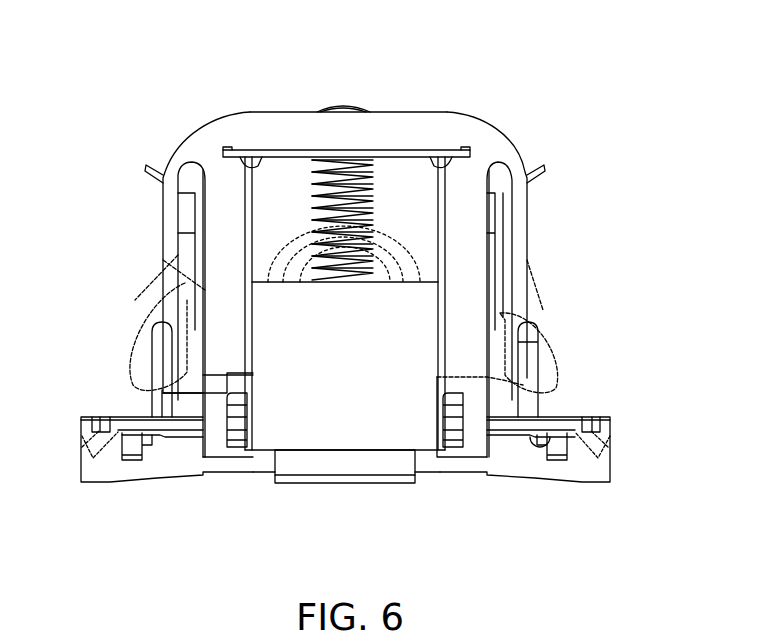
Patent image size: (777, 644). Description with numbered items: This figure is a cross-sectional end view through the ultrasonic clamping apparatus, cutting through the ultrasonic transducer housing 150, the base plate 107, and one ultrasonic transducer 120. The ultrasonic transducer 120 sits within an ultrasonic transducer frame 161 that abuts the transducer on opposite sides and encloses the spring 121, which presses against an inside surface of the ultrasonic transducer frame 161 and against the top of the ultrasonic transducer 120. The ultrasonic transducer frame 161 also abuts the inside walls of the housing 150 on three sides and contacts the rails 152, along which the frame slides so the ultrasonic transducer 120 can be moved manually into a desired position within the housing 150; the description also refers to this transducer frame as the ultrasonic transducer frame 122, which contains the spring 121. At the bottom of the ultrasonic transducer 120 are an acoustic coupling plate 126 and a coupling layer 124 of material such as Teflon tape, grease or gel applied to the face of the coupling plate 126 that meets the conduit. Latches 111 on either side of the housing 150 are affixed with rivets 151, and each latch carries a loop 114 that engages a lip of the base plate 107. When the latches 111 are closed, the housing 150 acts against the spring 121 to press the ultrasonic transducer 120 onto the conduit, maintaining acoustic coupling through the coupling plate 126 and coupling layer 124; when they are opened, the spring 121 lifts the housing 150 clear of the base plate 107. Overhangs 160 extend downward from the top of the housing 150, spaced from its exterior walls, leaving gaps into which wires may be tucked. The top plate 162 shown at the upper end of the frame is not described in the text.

The base plate 107 is at (587, 470).
The latch 111 is at (548, 357).
The loop 114 is at (147, 402).
The ultrasonic transducer 120 is at (388, 430).
The spring 121 is at (353, 165).
The ultrasonic transducer frame 122 is at (540, 392).
The coupling layer 124 is at (323, 483).
The acoustic coupling plate 126 is at (272, 473).
The ultrasonic transducer housing 150 is at (450, 112).
The rivet 151 is at (175, 300).
The rail 152 is at (225, 472).
The overhang 160 is at (168, 216).
The ultrasonic transducer frame 161 is at (227, 425).
The top plate 162 is at (287, 150).